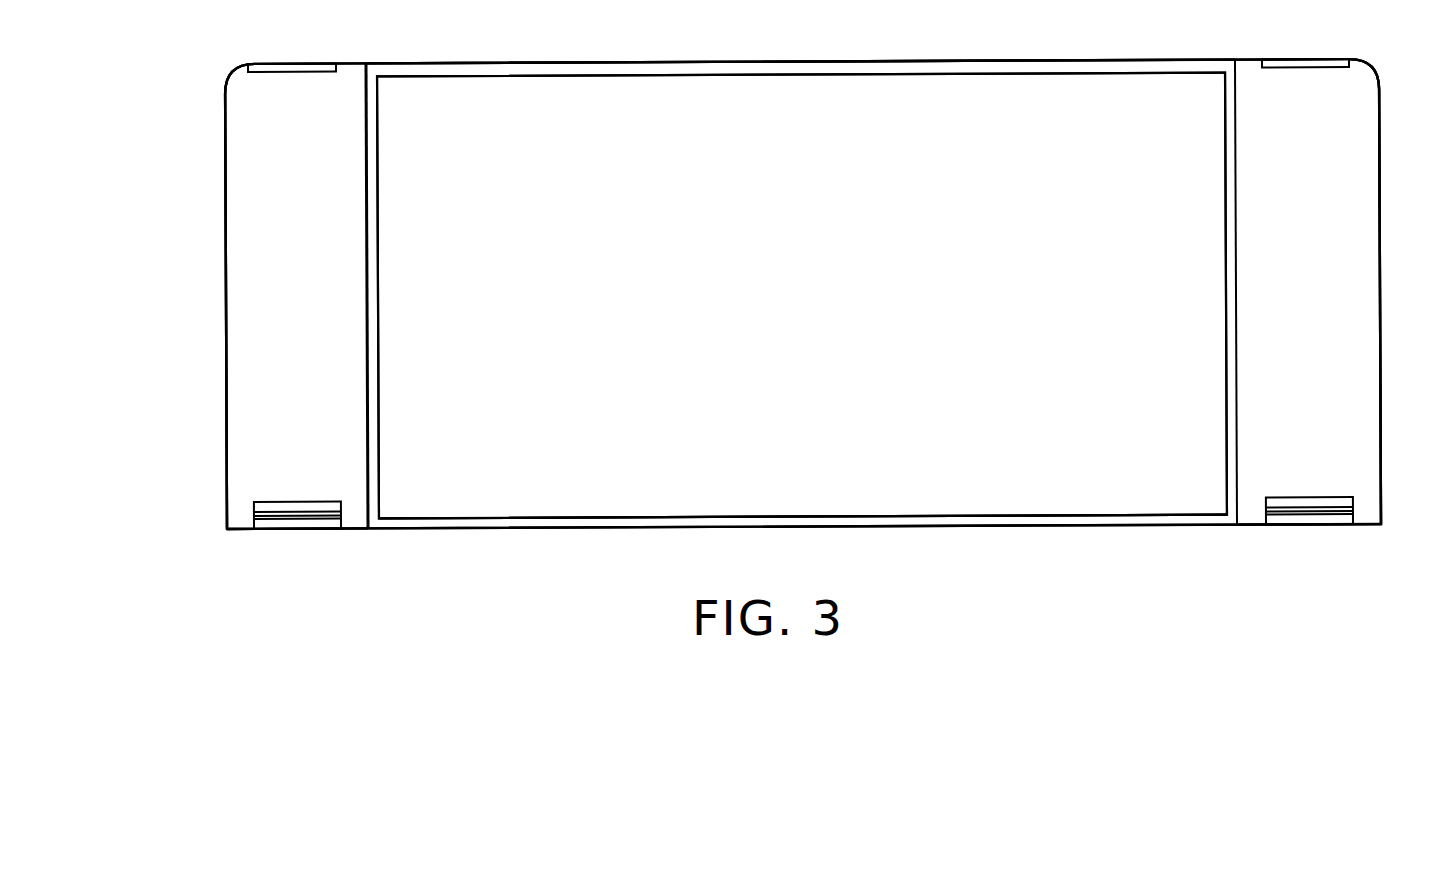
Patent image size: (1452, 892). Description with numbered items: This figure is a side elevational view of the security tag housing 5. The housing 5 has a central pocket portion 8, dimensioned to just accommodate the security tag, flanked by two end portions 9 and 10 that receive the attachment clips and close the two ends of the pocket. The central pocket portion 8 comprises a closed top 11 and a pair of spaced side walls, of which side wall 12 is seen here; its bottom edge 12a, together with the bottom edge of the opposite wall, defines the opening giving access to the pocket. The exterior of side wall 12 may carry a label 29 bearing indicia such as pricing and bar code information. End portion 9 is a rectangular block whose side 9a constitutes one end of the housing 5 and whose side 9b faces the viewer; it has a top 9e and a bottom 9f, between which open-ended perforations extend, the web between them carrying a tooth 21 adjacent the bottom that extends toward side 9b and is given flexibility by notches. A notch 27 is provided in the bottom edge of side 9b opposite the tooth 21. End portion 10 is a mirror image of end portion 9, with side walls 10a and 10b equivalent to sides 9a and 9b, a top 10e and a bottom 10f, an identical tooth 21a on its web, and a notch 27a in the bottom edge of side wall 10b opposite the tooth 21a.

The security tag housing 5 is at (517, 62).
The central pocket portion 8 is at (755, 61).
The end portion 9 is at (1380, 292).
The side 9a is at (1380, 203).
The side 9b is at (1366, 361).
The top 9e is at (1291, 58).
The bottom 9f is at (1360, 525).
The end portion 10 is at (225, 258).
The side wall 10a is at (225, 164).
The side wall 10b is at (247, 393).
The top 10e is at (311, 62).
The bottom 10f is at (240, 529).
The closed top 11 is at (893, 60).
The side wall 12 is at (621, 74).
The bottom edge 12a is at (893, 528).
The tooth 21 is at (1310, 524).
The tooth 21a is at (308, 528).
The notch 27 is at (1305, 497).
The notch 27a is at (277, 502).
The label 29 is at (792, 318).